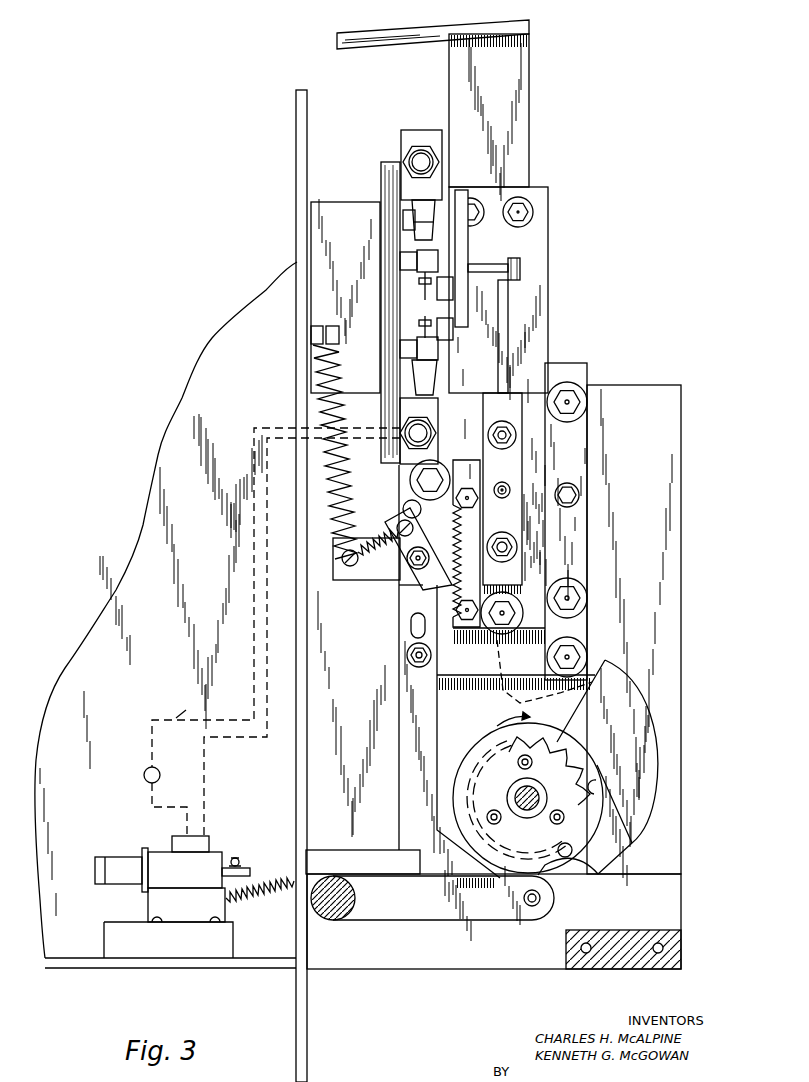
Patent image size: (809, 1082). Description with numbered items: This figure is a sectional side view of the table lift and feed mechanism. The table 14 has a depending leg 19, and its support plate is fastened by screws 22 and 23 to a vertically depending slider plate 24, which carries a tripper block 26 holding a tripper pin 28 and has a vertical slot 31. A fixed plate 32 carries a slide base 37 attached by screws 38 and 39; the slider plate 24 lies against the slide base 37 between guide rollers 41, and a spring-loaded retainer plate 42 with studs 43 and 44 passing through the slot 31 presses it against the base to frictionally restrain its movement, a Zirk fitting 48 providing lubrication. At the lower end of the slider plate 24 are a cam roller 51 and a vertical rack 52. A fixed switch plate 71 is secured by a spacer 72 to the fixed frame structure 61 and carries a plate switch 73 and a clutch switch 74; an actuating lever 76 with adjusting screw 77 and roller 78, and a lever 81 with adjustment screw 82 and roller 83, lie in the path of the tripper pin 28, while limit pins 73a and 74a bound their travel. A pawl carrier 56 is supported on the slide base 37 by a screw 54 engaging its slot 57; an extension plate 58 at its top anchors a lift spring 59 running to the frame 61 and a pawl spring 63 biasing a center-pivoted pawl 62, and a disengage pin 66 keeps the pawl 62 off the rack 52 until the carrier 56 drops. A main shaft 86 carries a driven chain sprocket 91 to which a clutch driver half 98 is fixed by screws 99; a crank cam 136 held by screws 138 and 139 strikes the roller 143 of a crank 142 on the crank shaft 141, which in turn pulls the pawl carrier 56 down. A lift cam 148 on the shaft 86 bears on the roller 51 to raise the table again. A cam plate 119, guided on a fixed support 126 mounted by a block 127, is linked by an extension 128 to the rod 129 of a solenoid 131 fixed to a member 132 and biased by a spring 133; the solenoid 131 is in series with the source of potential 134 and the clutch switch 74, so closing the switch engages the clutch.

The table 14 is at (533, 31).
The leg 19 is at (525, 147).
The screw 22 is at (480, 214).
The screw 23 is at (534, 212).
The slider plate 24 is at (548, 233).
The tripper block 26 is at (468, 247).
The tripper pin 28 is at (515, 258).
The vertical slot 31 is at (508, 291).
The fixed plate 32 is at (681, 408).
The slide base 37 is at (582, 428).
The screw 38 is at (404, 506).
The screw 39 is at (576, 490).
The guide rollers 41 is at (575, 392).
The retainer plate 42 is at (519, 400).
The stud 43 is at (503, 421).
The stud 44 is at (500, 560).
The Zirk fitting 48 is at (501, 482).
The cam roller 51 is at (523, 614).
The rack 52 is at (467, 460).
The screw 54 is at (407, 657).
The pawl carrier 56 is at (400, 745).
The slot 57 is at (410, 627).
The extension plate 58 is at (352, 582).
The lift spring 59 is at (336, 370).
The fixed frame structure 61 is at (296, 298).
The pawl 62 is at (418, 586).
The pawl spring 63 is at (390, 560).
The disengage pin 66 is at (430, 560).
The switch plate 71 is at (384, 165).
The spacer 72 is at (338, 200).
The plate switch 73 is at (408, 131).
The limit pin 73a is at (418, 274).
The clutch switch 74 is at (438, 410).
The limit pin 74a is at (408, 332).
The actuating lever 76 is at (424, 300).
The adjusting screw 77 is at (427, 270).
The roller 78 is at (453, 289).
The lever 81 is at (428, 367).
The adjustment screw 82 is at (418, 322).
The roller 83 is at (438, 348).
The main shaft 86 is at (532, 791).
The driven chain sprocket 91 is at (506, 760).
The clutch driver half 98 is at (562, 758).
The screws 99 is at (494, 810).
The cam plate 119 is at (331, 858).
The fixed support 126 is at (672, 898).
The block 127 is at (675, 952).
The extension 128 is at (237, 856).
The solenoid rod 129 is at (95, 875).
The solenoid 131 is at (186, 879).
The fixed member 132 is at (230, 960).
The spring 133 is at (263, 898).
The source of potential 134 is at (150, 765).
The crank cam 136 is at (620, 826).
The screw 138 is at (568, 858).
The screw 139 is at (597, 802).
The crank shaft 141 is at (340, 920).
The crank 142 is at (462, 920).
The roller 143 is at (540, 900).
The lift cam 148 is at (628, 695).